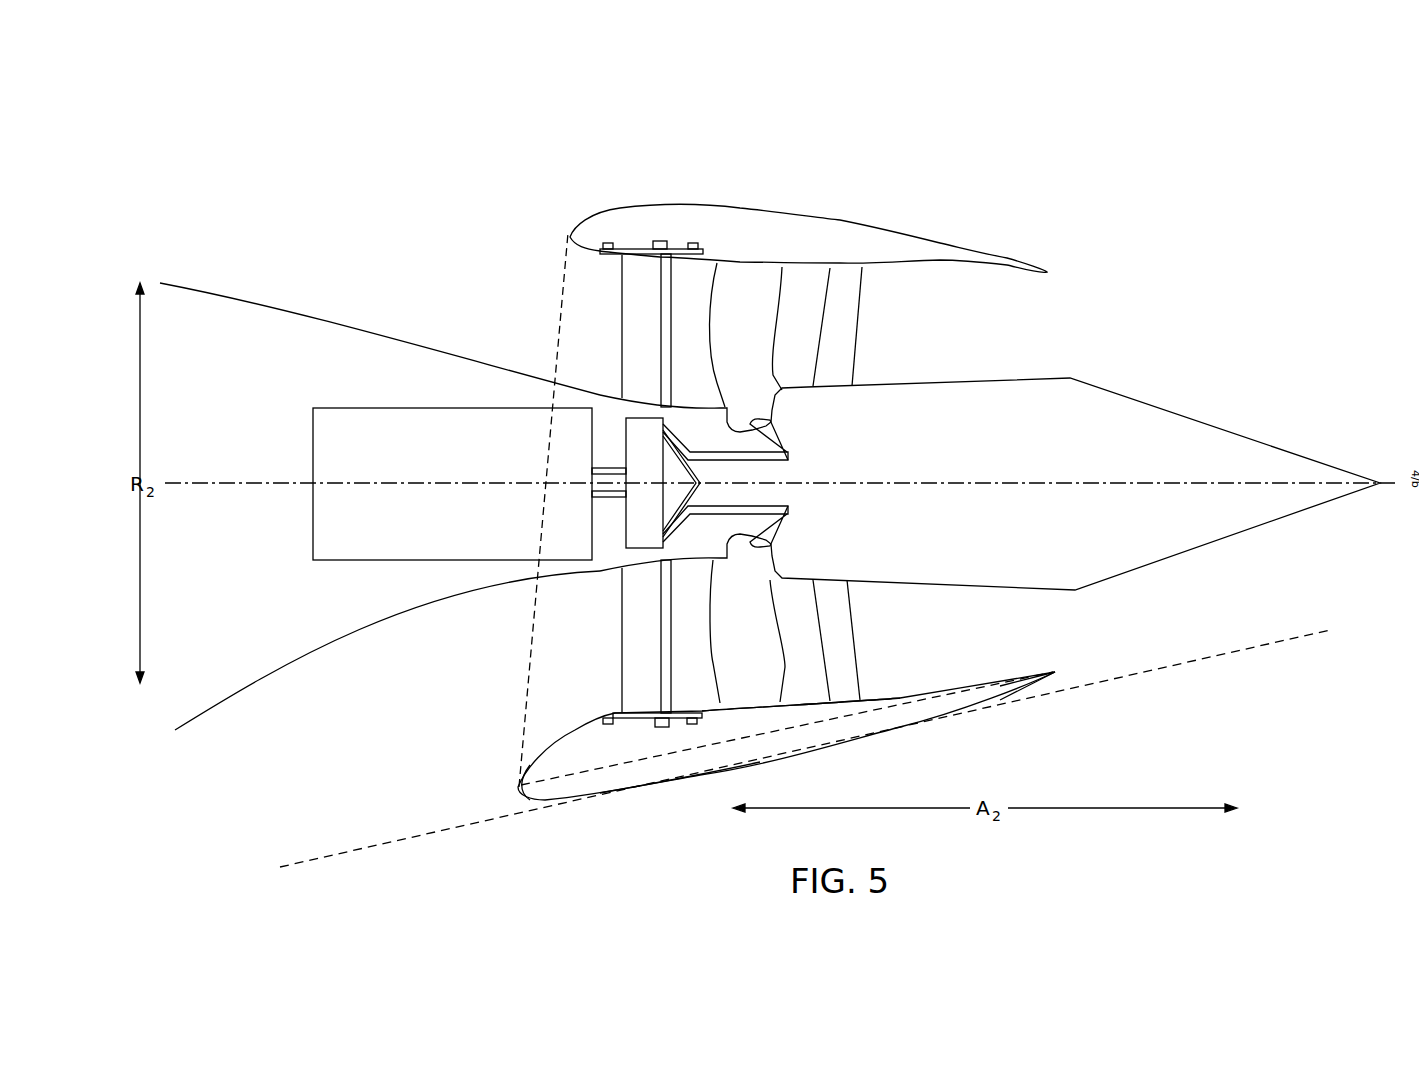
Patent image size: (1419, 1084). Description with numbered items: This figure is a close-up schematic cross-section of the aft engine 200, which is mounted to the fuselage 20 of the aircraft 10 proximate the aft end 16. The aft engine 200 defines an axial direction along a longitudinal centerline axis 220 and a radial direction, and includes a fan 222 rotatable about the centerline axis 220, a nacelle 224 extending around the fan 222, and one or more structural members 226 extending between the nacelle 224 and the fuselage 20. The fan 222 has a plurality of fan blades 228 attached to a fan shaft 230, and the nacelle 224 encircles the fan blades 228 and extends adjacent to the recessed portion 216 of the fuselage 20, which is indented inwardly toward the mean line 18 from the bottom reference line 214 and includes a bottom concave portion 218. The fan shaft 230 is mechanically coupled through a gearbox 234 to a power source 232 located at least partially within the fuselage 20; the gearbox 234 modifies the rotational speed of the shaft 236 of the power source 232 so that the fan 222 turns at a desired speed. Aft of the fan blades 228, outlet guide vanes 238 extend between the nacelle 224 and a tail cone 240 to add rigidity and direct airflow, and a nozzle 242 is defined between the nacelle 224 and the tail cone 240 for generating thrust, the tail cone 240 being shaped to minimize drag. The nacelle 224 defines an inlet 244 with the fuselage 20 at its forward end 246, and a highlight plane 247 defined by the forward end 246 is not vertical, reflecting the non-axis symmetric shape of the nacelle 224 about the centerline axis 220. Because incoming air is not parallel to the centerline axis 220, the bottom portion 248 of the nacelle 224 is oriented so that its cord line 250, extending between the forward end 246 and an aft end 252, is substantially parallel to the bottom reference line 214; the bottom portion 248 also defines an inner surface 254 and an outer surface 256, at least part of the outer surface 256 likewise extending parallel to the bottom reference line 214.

The aircraft 10 is at (378, 213).
The aft end 16 is at (1260, 336).
The mean line 18 is at (245, 471).
The fuselage 20 is at (236, 297).
The aft engine 200 is at (1115, 223).
The bottom reference line 214 is at (393, 846).
The recessed portion 216 is at (455, 168).
The bottom concave portion 218 is at (280, 740).
The longitudinal centerline axis 220 is at (1298, 483).
The fan 222 is at (751, 288).
The nacelle 224 is at (790, 205).
The structural member 226 is at (633, 298).
The fan blades 228 is at (773, 312).
The fan shaft 230 is at (755, 468).
The power source 232 is at (483, 408).
The gearbox 234 is at (622, 430).
The shaft 236 is at (610, 495).
The outlet guide vanes 238 is at (848, 645).
The tail cone 240 is at (1130, 392).
The nozzle 242 is at (1030, 336).
The inlet 244 is at (574, 667).
The forward end 246 is at (517, 805).
The highlight plane 247 is at (563, 308).
The bottom portion 248 is at (663, 772).
The cord line 250 is at (767, 742).
The aft end 252 is at (1066, 679).
The inner surface 254 is at (798, 690).
The outer surface 256 is at (711, 783).